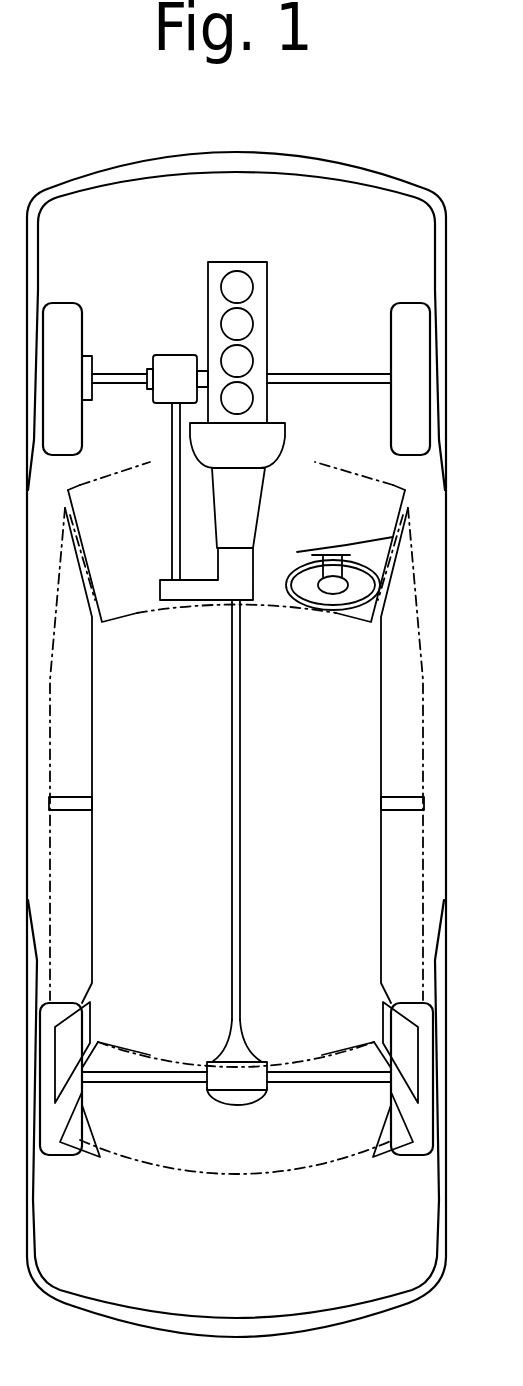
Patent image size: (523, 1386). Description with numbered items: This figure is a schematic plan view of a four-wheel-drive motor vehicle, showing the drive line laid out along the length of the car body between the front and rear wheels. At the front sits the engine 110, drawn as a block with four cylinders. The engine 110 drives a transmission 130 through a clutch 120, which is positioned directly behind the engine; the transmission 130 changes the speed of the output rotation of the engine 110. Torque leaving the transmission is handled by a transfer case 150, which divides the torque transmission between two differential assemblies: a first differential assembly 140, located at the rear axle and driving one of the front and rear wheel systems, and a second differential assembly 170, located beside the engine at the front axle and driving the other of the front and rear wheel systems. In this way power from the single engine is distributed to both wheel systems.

The engine 110 is at (260, 285).
The clutch 120 is at (270, 448).
The transmission 130 is at (248, 515).
The first differential assembly 140 is at (237, 1063).
The transfer case 150 is at (247, 592).
The second differential assembly 170 is at (173, 355).